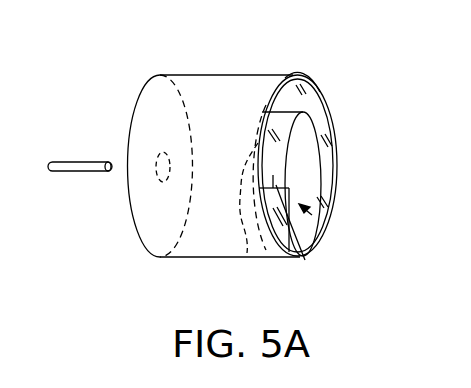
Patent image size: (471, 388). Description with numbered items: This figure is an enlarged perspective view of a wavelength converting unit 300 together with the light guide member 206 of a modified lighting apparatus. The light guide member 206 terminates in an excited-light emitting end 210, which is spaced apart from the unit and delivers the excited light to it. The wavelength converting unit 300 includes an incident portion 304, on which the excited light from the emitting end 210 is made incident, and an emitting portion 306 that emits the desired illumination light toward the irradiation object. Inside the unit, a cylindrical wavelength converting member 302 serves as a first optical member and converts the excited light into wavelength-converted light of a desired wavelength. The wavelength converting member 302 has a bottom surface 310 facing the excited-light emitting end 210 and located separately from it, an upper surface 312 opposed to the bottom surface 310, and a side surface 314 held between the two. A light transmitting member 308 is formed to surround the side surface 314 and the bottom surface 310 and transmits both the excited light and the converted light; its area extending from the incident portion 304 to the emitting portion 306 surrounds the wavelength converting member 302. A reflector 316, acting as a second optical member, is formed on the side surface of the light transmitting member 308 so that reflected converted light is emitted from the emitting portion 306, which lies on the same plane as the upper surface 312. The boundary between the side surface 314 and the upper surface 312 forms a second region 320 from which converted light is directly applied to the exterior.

The wavelength converting unit 300 is at (267, 58).
The wavelength converting member 302 is at (318, 217).
The incident portion 304 is at (155, 160).
The emitting portion 306 is at (318, 100).
The light transmitting member 308 is at (208, 87).
The bottom surface 310 is at (247, 253).
The upper surface 312 is at (310, 173).
The side surface 314 is at (305, 260).
The reflector 316 is at (312, 80).
The second region 320 is at (320, 133).
The light guide member 206 is at (62, 174).
The excited-light emitting end 210 is at (110, 174).